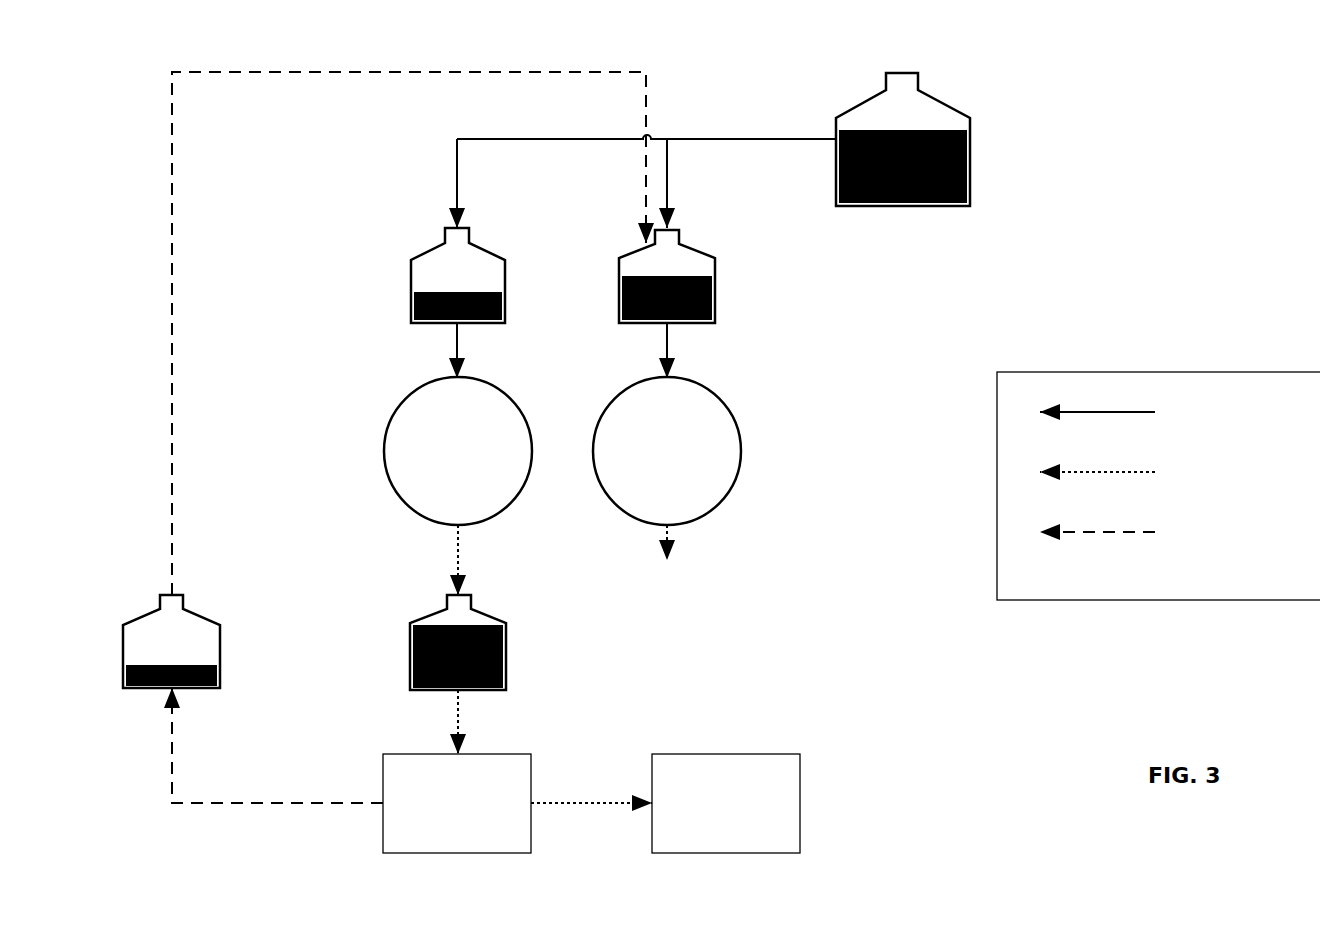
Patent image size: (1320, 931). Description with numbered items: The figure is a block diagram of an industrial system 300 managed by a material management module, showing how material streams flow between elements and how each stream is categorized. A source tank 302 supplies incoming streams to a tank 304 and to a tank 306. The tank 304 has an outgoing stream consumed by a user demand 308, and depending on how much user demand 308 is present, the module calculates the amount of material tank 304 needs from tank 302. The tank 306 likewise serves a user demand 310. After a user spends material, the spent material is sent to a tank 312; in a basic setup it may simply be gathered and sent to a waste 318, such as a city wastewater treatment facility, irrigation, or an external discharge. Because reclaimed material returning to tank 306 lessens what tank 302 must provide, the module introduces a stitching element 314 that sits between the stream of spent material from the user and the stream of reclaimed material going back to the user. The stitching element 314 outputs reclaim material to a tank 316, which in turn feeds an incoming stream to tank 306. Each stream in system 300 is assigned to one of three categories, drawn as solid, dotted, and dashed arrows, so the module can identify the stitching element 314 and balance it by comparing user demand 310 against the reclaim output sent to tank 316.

The industrial system 300 is at (728, 37).
The tank 302 is at (903, 158).
The tank 304 is at (490, 275).
The tank 306 is at (695, 271).
The user demand 308 is at (458, 451).
The user demand 310 is at (667, 451).
The tank 312 is at (489, 640).
The stitching element 314 is at (457, 803).
The tank 316 is at (206, 639).
The waste 318 is at (726, 803).